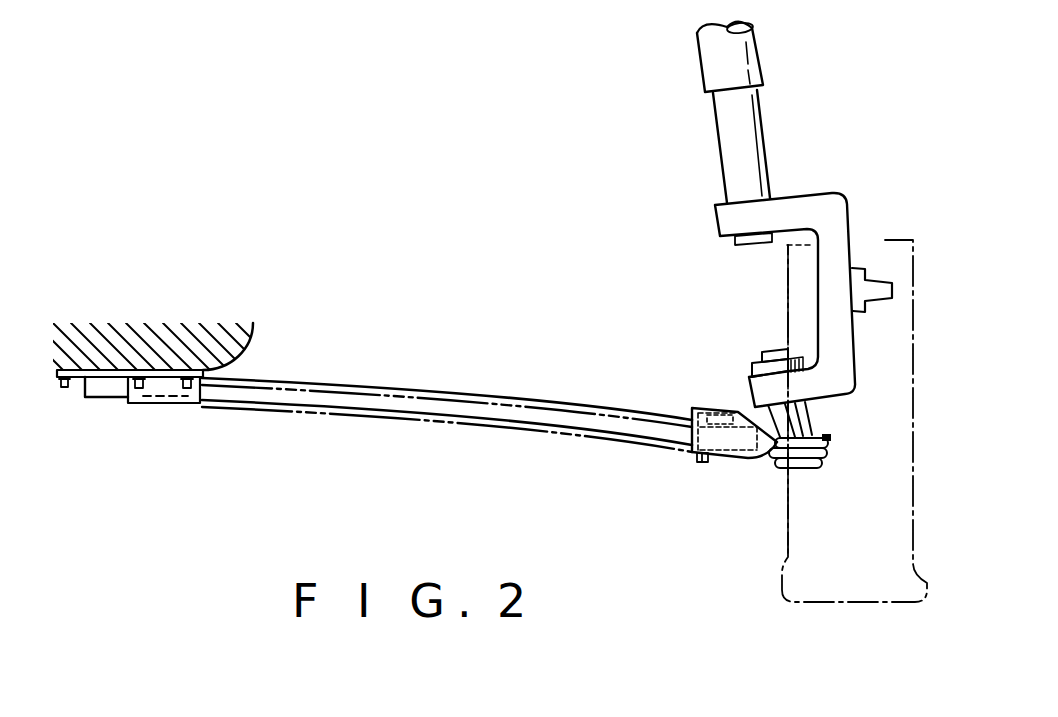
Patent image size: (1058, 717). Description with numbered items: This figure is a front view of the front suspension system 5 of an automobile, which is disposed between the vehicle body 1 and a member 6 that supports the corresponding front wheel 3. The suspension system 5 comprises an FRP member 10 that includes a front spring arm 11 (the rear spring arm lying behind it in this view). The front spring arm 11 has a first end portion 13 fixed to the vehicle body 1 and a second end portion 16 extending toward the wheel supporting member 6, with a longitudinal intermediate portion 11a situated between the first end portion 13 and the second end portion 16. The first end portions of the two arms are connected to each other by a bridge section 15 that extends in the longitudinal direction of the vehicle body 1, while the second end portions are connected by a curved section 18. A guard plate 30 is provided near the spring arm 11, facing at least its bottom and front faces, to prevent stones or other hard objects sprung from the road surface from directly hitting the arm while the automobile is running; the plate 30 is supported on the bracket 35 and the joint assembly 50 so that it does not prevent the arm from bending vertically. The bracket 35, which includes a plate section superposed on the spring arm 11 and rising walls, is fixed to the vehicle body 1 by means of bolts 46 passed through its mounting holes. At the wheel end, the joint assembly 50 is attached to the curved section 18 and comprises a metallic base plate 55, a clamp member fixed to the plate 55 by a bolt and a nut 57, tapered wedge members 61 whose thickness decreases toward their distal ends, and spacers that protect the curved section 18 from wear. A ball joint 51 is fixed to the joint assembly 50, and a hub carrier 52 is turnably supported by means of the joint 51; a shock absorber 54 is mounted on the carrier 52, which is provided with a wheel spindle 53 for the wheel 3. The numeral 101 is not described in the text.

The vehicle body 1 is at (248, 350).
The front wheel 3 is at (790, 528).
The suspension system 5 is at (507, 449).
The wheel supporting member 6 is at (704, 282).
The FRP member 10 is at (313, 416).
The front spring arm 11 is at (363, 409).
The longitudinal intermediate portion 11a is at (470, 396).
The first end portion 13 is at (212, 388).
The bridge section 15 is at (121, 386).
The second end portion 16 is at (670, 433).
The curved section 18 is at (733, 512).
The guard plate 30 is at (443, 422).
The bracket 35 is at (172, 405).
The bolt 46 is at (64, 388).
The joint assembly 50 is at (706, 388).
The ball joint 51 is at (818, 419).
The hub carrier 52 is at (843, 193).
The wheel spindle 53 is at (877, 276).
The shock absorber 54 is at (700, 77).
The metallic base plate 55 is at (690, 410).
The nut 57 is at (700, 465).
The wedge member 61 is at (734, 497).
The clamp pad 101 is at (832, 438).